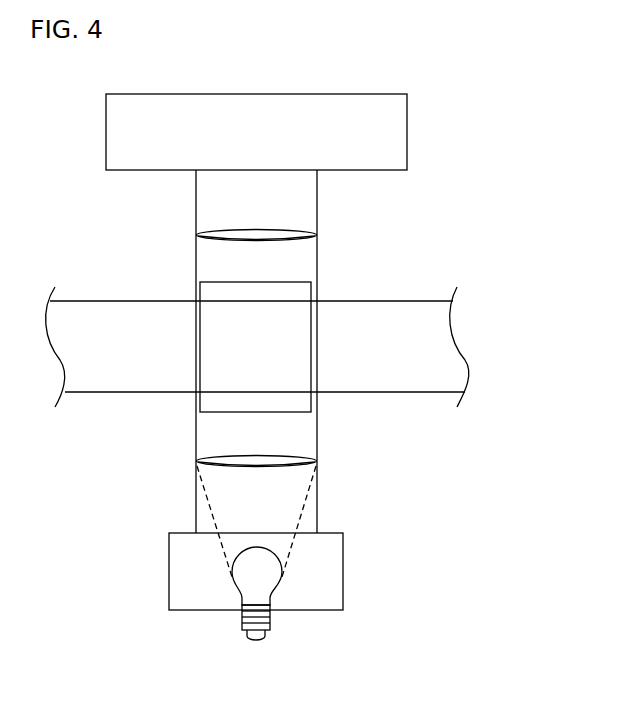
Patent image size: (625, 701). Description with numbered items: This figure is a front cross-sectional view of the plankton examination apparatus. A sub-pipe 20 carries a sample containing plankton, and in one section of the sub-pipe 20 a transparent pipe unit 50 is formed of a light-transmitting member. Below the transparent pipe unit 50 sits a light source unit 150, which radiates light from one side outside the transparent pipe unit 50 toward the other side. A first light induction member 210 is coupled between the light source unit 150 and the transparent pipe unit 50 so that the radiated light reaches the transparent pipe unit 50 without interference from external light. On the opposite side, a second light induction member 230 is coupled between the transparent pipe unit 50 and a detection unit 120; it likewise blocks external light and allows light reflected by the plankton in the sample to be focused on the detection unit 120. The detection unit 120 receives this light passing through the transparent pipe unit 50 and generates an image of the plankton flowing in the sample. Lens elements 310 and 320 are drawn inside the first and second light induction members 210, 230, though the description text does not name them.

The detection unit 120 is at (407, 137).
The second light induction member 230 is at (317, 193).
The first light induction member 210 is at (317, 503).
The second lens 320 is at (317, 237).
The first lens 310 is at (317, 460).
The transparent pipe unit 50 is at (305, 275).
The sub-pipe 20 is at (100, 301).
The light source unit 150 is at (343, 575).